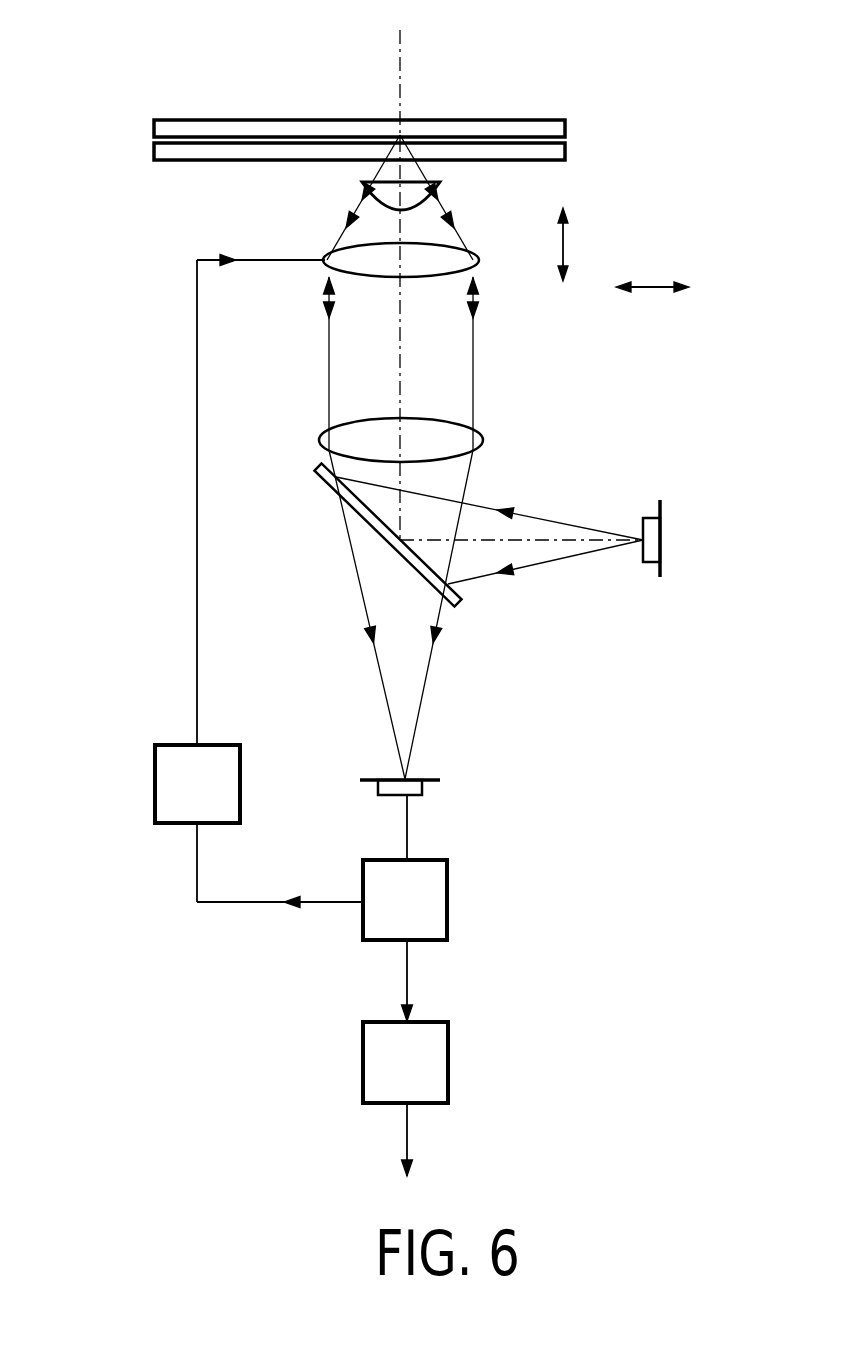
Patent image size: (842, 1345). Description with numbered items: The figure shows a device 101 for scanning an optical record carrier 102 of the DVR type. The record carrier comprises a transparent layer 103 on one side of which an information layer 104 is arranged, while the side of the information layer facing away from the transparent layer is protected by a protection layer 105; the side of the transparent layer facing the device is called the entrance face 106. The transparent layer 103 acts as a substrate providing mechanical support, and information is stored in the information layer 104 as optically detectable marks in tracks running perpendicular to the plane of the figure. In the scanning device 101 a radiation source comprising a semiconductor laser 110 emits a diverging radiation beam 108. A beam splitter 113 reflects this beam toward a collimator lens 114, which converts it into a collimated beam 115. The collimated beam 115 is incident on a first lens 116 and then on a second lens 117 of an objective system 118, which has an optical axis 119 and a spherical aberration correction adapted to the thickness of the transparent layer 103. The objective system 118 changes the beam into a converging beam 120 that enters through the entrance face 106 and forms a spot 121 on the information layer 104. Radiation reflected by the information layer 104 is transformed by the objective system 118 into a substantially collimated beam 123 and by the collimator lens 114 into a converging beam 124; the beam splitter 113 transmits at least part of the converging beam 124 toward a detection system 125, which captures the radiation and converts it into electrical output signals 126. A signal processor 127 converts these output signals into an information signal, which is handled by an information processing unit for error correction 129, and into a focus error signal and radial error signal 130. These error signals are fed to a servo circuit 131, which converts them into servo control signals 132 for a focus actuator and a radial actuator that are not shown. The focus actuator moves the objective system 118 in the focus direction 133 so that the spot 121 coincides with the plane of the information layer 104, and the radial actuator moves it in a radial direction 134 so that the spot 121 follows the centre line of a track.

The scanning device 101 is at (110, 498).
The optical record carrier 102 is at (108, 41).
The transparent layer 103 is at (318, 145).
The information layer 104 is at (197, 137).
The protection layer 105 is at (278, 123).
The entrance face 106 is at (176, 162).
The radiation beam 108 is at (597, 525).
The semiconductor laser 110 is at (665, 532).
The beam splitter 113 is at (318, 478).
The collimator lens 114 is at (321, 440).
The collimated beam 115 is at (481, 262).
The first lens 116 is at (404, 257).
The second lens 117 is at (362, 183).
The objective system 118 is at (371, 231).
The optical axis 119 is at (404, 58).
The converging beam 120 is at (440, 178).
The spot 121 is at (398, 118).
The substantially collimated beam 123 is at (478, 303).
The converging beam 124 is at (471, 480).
The detection system 125 is at (424, 788).
The electrical output signals 126 is at (409, 832).
The signal processor 127 is at (448, 895).
The information processing unit for error correction 129 is at (449, 1058).
The focus error signal and radial error signal 130 is at (258, 905).
The servo circuit 131 is at (155, 785).
The servo control signals 132 is at (196, 550).
The focus direction 133 is at (564, 245).
The radial direction 134 is at (643, 288).